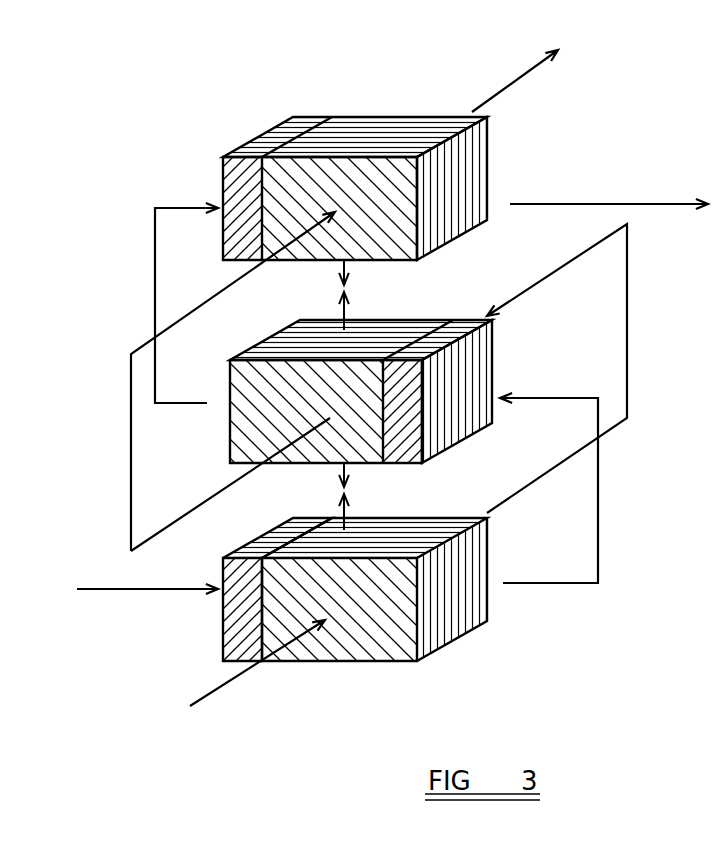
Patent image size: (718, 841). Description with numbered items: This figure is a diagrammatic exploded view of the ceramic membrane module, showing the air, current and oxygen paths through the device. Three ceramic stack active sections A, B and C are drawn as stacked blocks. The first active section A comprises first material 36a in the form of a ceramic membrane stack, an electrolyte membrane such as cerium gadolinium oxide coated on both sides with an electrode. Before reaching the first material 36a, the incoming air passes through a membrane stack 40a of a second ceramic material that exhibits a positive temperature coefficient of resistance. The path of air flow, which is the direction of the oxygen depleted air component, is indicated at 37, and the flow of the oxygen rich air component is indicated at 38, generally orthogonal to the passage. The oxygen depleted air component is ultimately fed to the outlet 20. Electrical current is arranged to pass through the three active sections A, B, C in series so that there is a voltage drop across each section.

The outlet 20 is at (660, 204).
The first material 36a is at (398, 633).
The direction of flow of oxygen depleted air component 37 is at (153, 300).
The direction of flow of oxygen rich air component 38 is at (343, 292).
The membrane stack of second ceramic material 40a is at (222, 628).
The first active section A is at (497, 562).
The second active section B is at (503, 358).
The third active section C is at (403, 118).